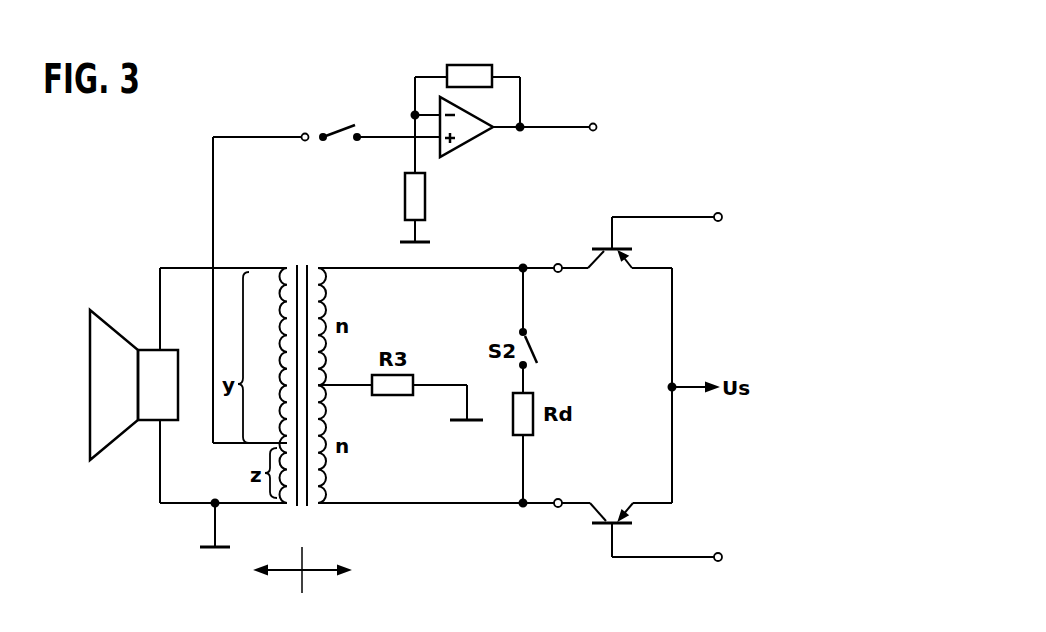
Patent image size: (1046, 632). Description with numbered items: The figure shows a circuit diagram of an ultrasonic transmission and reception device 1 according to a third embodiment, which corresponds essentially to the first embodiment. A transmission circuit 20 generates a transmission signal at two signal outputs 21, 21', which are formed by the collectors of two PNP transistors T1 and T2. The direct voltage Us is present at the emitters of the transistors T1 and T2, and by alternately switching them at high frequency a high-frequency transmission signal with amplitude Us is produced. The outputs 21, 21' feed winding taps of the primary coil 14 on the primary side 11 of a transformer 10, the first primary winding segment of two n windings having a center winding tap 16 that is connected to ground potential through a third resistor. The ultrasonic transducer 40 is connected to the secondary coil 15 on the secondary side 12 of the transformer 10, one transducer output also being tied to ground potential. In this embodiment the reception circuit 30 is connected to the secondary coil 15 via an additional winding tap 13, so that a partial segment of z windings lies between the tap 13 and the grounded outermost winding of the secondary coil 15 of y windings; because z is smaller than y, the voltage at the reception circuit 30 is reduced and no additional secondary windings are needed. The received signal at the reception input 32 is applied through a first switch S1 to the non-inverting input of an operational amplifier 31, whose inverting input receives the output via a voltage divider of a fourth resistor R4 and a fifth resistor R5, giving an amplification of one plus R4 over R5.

The ultrasonic transmission and reception device 1 is at (158, 548).
The transformer 10 is at (320, 341).
The primary side 11 is at (339, 597).
The secondary side 12 is at (262, 597).
The additional winding tap 13 is at (282, 443).
The primary coil 14 is at (328, 485).
The secondary coil 15 is at (279, 286).
The center winding tap 16 is at (322, 387).
The transmission circuit 20 is at (626, 416).
The signal output 21 is at (537, 243).
The signal output 21' is at (536, 531).
The reception circuit 30 is at (501, 124).
The operational amplifier 31 is at (468, 142).
The reception input 32 is at (305, 133).
The ultrasonic transducer 40 is at (133, 242).
The first switch S1 is at (380, 149).
The fourth resistor R4 is at (469, 63).
The fifth resistor R5 is at (434, 196).
The PNP transistor T1 is at (655, 257).
The PNP transistor T2 is at (656, 519).